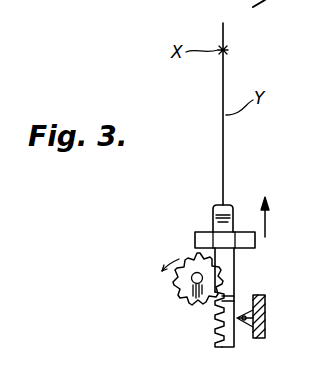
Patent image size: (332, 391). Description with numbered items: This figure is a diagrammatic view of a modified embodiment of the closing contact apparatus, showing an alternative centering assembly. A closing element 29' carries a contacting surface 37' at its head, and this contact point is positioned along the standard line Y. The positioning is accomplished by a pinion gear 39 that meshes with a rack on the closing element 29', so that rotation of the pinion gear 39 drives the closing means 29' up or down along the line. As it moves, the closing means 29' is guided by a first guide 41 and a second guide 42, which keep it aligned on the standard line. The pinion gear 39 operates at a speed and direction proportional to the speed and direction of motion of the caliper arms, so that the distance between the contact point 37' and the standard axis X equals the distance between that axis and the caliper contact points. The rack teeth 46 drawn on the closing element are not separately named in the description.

The contacting surface 37' is at (239, 201).
The guide 41 is at (203, 233).
The closing element 29' is at (251, 297).
The rack teeth 46 is at (216, 318).
The pinion gear 39 is at (185, 297).
The guide 42 is at (239, 313).